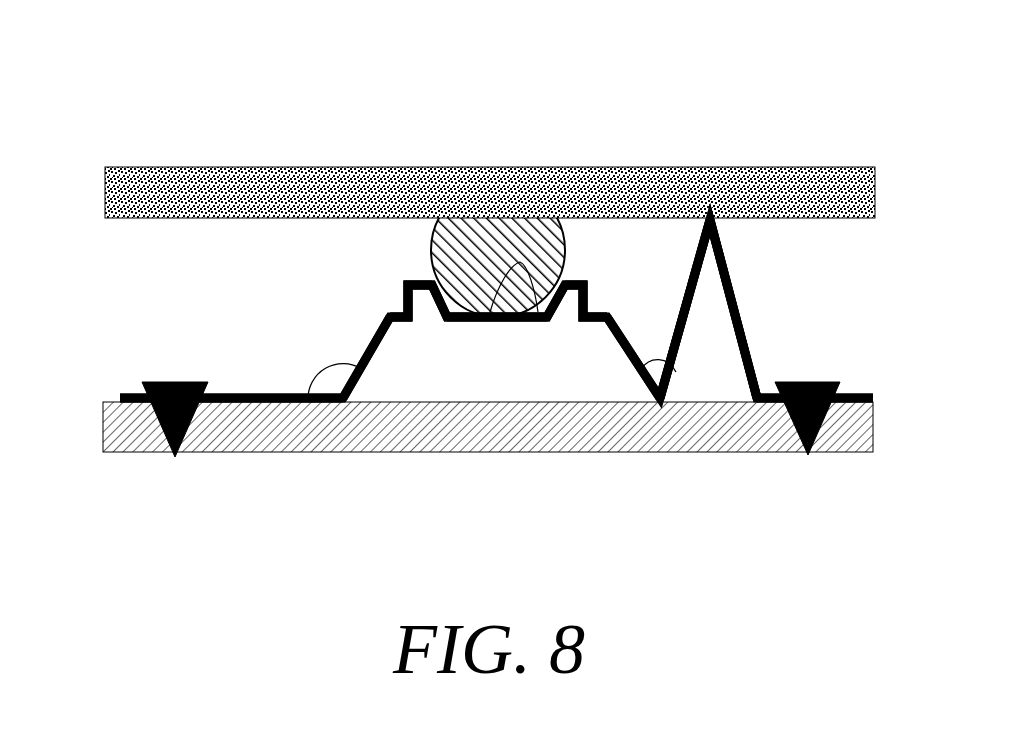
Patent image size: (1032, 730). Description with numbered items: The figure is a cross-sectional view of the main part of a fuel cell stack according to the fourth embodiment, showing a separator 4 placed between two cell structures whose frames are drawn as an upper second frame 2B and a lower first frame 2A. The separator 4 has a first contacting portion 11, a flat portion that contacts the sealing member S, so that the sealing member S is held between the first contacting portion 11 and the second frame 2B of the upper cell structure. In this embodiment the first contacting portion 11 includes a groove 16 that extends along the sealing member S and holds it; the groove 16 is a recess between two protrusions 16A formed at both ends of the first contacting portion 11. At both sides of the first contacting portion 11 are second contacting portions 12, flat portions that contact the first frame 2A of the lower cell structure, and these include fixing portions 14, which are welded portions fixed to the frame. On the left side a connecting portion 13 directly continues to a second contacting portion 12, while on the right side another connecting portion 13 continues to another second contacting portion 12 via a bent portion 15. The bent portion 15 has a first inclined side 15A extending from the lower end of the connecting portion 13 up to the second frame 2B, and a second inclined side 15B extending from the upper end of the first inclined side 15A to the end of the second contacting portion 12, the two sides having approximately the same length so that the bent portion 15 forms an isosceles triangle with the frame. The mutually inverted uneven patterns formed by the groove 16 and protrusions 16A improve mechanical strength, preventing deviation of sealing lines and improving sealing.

The second frame 2B is at (125, 198).
The first frame 2A is at (108, 425).
The sealing member S is at (480, 218).
The separator 4 is at (873, 396).
The first contacting portion 11 is at (480, 322).
The second contacting portion 12 is at (252, 404).
The connecting portion 13 is at (378, 348).
The fixing portion 14 is at (168, 382).
The bent portion 15 is at (845, 70).
The first inclined side 15A is at (684, 313).
The second inclined side 15B is at (740, 288).
The groove 16 is at (540, 322).
The protrusion 16A is at (407, 283).